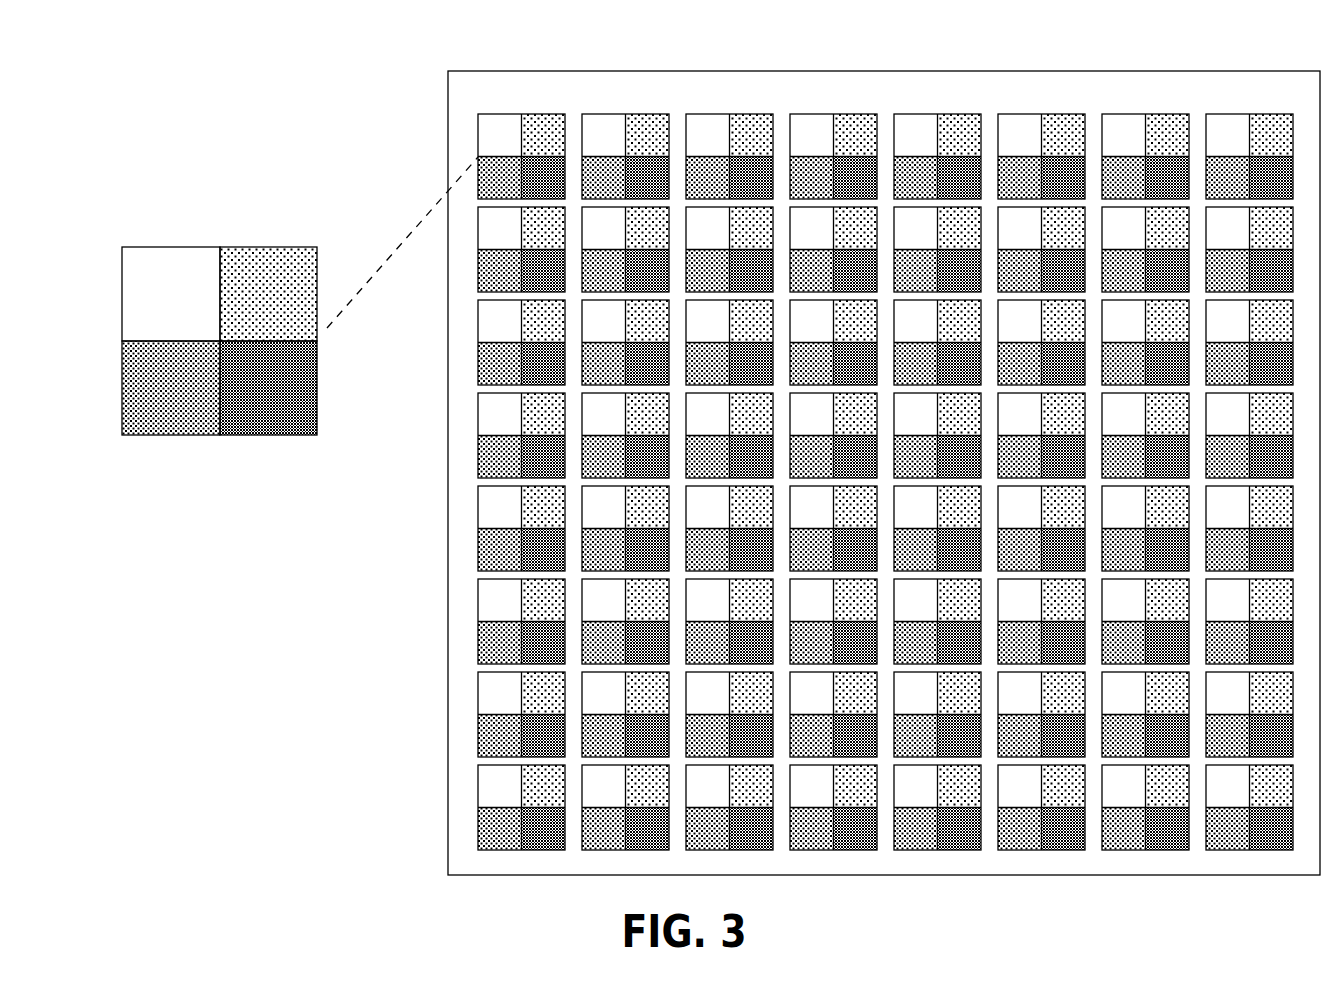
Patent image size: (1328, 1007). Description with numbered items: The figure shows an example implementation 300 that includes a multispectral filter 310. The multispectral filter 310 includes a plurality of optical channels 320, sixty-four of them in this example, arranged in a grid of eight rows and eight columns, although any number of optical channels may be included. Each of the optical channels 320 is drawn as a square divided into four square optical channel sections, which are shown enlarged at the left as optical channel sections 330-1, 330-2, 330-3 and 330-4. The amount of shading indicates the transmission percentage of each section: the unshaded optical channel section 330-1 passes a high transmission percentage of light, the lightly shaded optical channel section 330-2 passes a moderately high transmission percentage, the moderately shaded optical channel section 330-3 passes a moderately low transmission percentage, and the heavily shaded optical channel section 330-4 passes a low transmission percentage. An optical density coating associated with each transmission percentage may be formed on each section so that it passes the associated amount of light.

The example implementation 300 is at (178, 50).
The multispectral filter 310 is at (816, 473).
The optical channels 320 is at (470, 847).
The optical channel section 330-1 is at (165, 298).
The optical channel section 330-2 is at (278, 293).
The optical channel section 330-3 is at (180, 385).
The optical channel section 330-4 is at (270, 385).